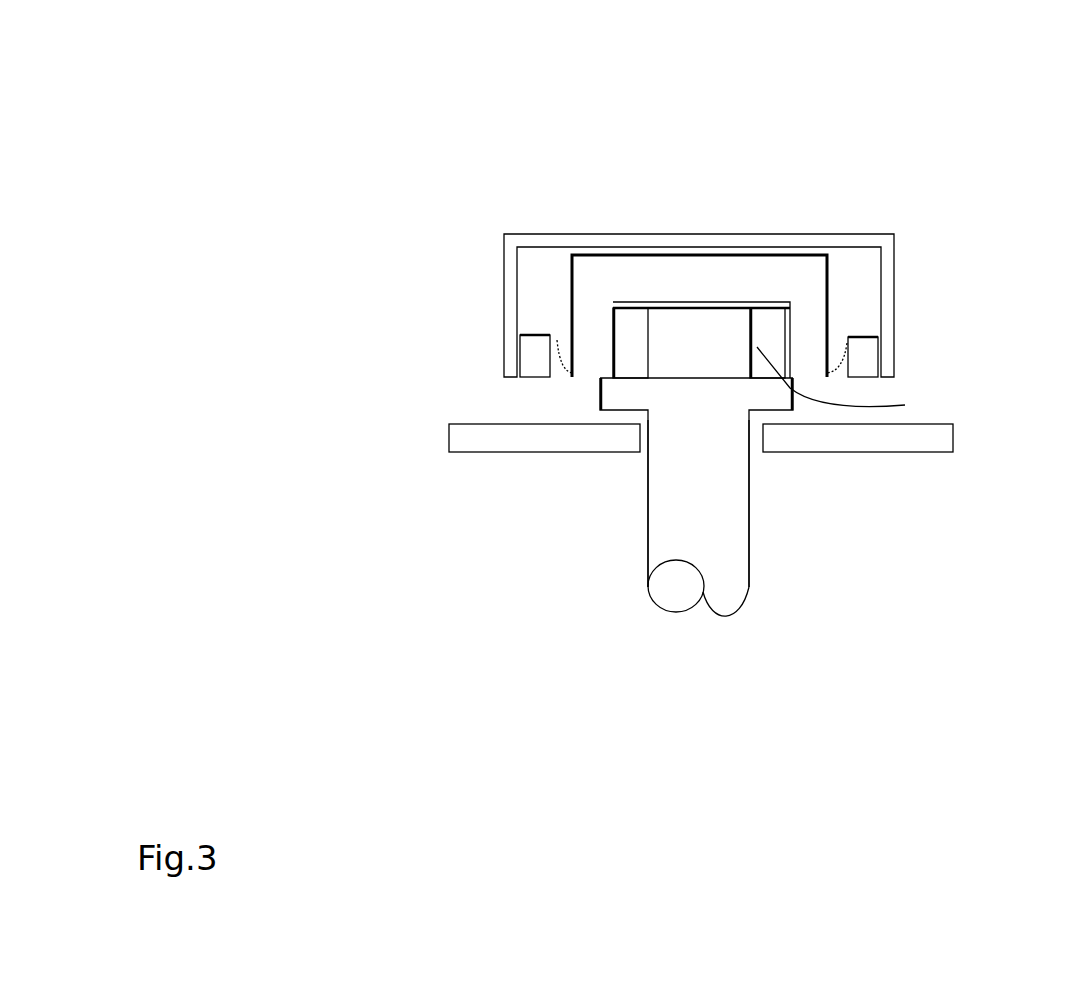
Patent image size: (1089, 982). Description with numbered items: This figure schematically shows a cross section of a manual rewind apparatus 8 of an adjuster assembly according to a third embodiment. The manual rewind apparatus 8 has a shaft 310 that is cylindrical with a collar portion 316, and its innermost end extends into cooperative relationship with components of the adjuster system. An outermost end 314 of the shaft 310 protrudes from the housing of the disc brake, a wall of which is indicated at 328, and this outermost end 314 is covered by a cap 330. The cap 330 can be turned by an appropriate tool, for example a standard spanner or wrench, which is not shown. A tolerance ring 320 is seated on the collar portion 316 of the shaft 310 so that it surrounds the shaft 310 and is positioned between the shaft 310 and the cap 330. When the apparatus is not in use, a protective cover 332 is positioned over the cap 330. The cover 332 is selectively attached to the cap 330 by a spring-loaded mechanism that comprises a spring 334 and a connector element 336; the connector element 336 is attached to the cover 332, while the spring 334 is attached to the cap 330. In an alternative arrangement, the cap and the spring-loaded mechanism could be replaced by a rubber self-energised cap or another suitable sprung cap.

The manual rewind apparatus 8 is at (926, 145).
The shaft 310 is at (722, 520).
The outermost end 314 is at (688, 337).
The collar portion 316 is at (622, 396).
The tolerance ring 320 is at (866, 383).
The housing wall 328 is at (928, 438).
The cap 330 is at (755, 270).
The protective cover 332 is at (893, 258).
The spring 334 is at (557, 340).
The connector element 336 is at (532, 350).